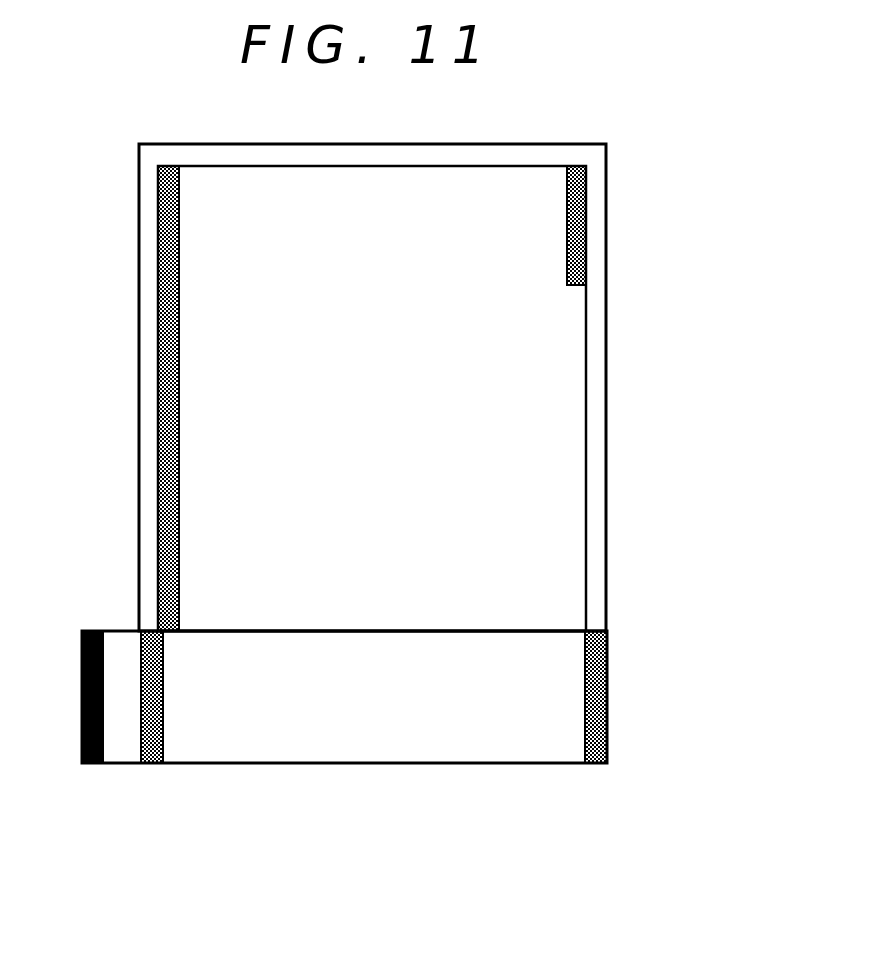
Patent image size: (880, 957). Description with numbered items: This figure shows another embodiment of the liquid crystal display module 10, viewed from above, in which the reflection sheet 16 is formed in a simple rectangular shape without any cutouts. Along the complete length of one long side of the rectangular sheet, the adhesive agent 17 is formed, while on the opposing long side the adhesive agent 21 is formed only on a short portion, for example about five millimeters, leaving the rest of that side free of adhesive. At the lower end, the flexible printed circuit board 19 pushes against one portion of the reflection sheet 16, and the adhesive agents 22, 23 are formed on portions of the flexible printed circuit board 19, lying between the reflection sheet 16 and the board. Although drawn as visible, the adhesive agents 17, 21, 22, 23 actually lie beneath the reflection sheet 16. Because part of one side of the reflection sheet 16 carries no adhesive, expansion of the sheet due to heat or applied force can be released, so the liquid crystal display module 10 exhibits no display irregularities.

The liquid crystal display module 10 is at (140, 330).
The reflection sheet 16 is at (555, 420).
The adhesive agent 17 is at (162, 465).
The flexible printed circuit board 19 is at (353, 742).
The adhesive agent 21 is at (586, 227).
The adhesive agent 22 is at (140, 740).
The adhesive agent 23 is at (607, 680).